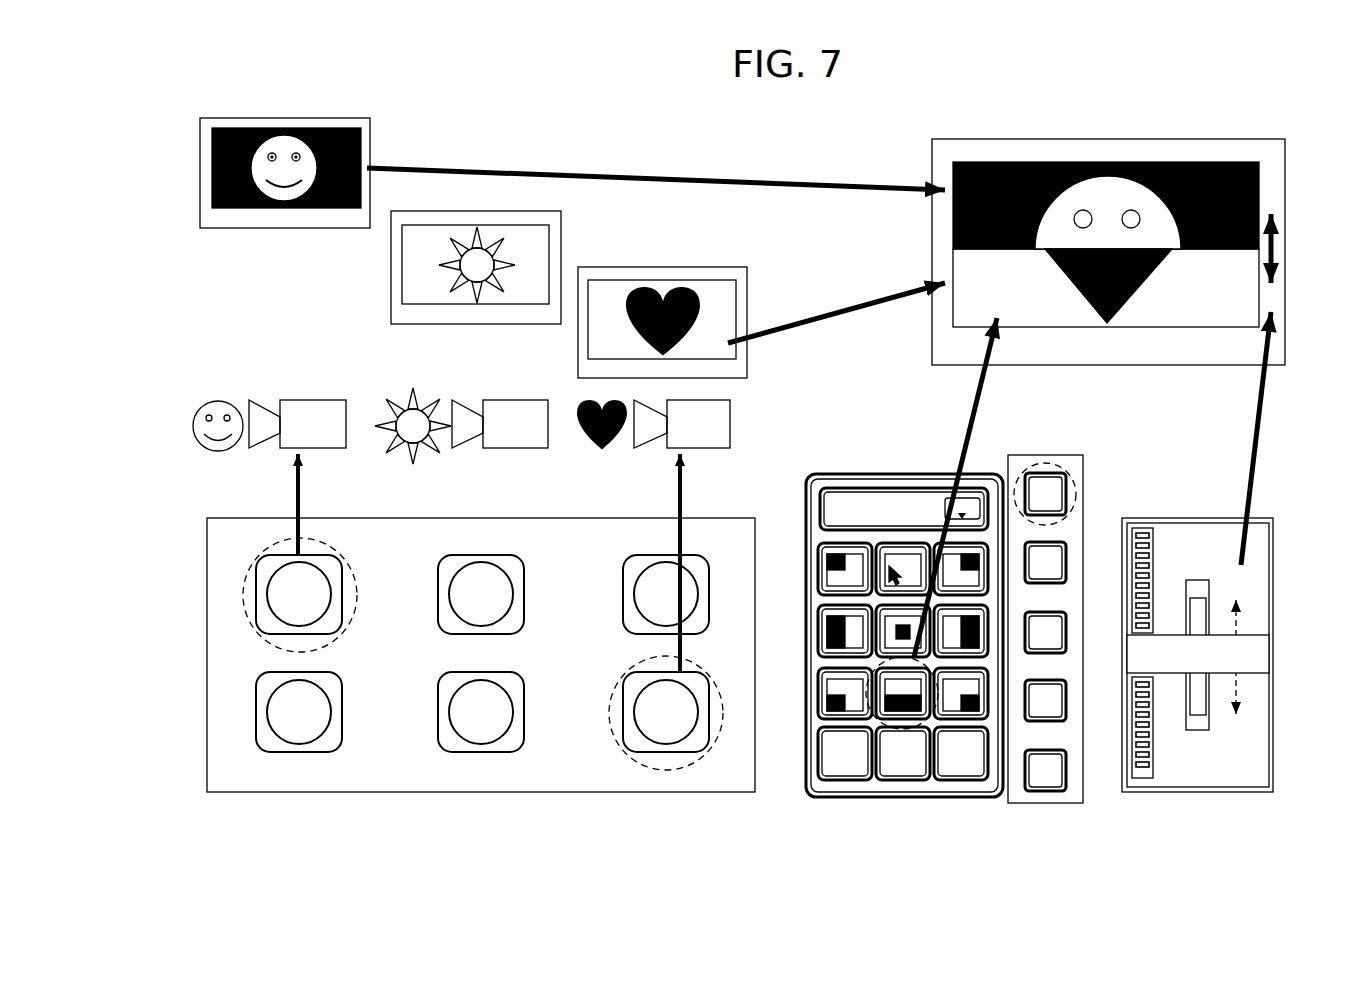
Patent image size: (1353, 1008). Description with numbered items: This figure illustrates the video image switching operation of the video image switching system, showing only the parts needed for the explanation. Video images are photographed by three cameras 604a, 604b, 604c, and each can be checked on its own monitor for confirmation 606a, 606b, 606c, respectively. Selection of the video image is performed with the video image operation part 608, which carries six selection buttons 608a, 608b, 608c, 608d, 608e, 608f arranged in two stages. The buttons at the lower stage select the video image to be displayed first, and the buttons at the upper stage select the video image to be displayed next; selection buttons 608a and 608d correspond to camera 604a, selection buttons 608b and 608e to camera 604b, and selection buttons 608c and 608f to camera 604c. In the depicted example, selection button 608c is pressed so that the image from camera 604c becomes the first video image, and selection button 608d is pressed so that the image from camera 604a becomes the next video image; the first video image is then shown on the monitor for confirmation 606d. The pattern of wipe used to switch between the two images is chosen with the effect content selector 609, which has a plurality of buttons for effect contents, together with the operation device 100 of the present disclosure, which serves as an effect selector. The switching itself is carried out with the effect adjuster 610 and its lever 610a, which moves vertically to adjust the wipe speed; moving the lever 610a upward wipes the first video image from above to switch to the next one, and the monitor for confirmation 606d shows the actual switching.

The operation device 100 is at (843, 782).
The camera 604a is at (312, 420).
The camera 604b is at (513, 415).
The camera 604c is at (715, 427).
The monitor for confirmation 606a is at (257, 212).
The monitor for confirmation 606b is at (552, 273).
The monitor for confirmation 606c is at (722, 305).
The monitor for confirmation 606d is at (1198, 153).
The video image operation part 608 is at (723, 775).
The selection button 608a is at (268, 733).
The selection button 608b is at (453, 727).
The selection button 608c is at (637, 733).
The selection button 608d is at (300, 570).
The selection button 608e is at (453, 568).
The selection button 608f is at (640, 570).
The effect content selector 609 is at (1022, 787).
The fader unit 610 is at (1234, 695).
The lever 610a is at (1258, 655).